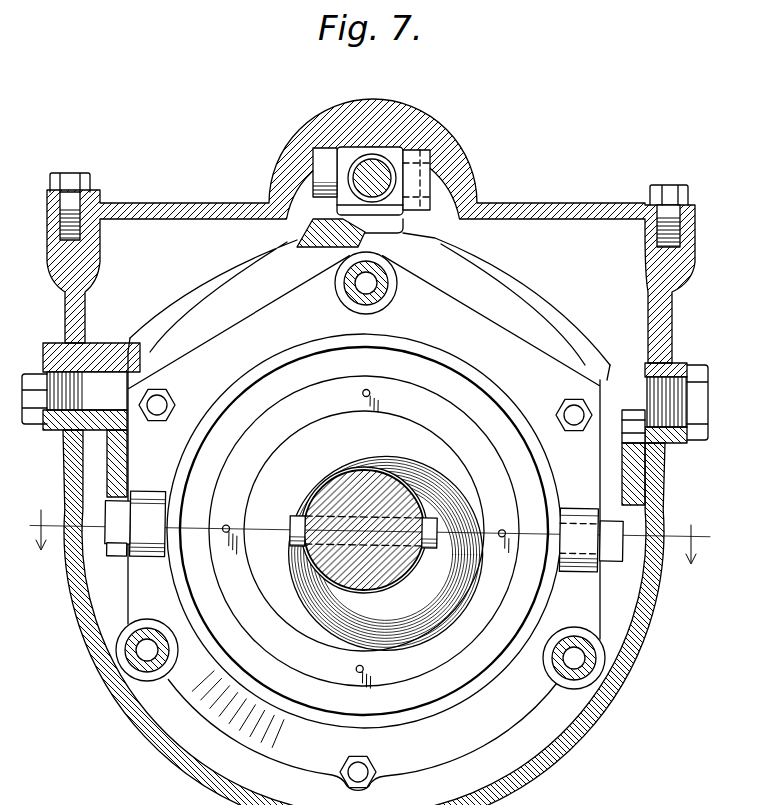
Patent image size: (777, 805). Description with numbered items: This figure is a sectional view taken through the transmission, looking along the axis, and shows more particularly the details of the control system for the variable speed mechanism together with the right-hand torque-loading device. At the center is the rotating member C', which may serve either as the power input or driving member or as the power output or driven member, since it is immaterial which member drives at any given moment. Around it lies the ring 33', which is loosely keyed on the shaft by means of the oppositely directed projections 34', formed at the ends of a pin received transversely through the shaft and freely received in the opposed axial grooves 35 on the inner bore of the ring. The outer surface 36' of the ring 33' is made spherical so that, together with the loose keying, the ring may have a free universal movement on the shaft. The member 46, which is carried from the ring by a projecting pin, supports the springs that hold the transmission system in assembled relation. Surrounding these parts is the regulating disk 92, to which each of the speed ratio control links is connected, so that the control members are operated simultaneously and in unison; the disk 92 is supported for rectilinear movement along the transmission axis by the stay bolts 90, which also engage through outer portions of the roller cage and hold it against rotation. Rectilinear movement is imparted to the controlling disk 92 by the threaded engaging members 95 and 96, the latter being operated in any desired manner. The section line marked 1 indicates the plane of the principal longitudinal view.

The section line 1 is at (365, 552).
The ring 33' is at (363, 530).
The oppositely directed projections 34' is at (442, 513).
The opposed axial grooves 35 is at (292, 522).
The outer surface of ring 36' is at (385, 559).
The member 46 is at (360, 393).
The stay bolts 90 is at (350, 292).
The regulating disk 92 is at (435, 340).
The threaded engaging member 95 is at (350, 157).
The threaded engaging member 96 is at (378, 163).
The rotating member C' is at (354, 534).